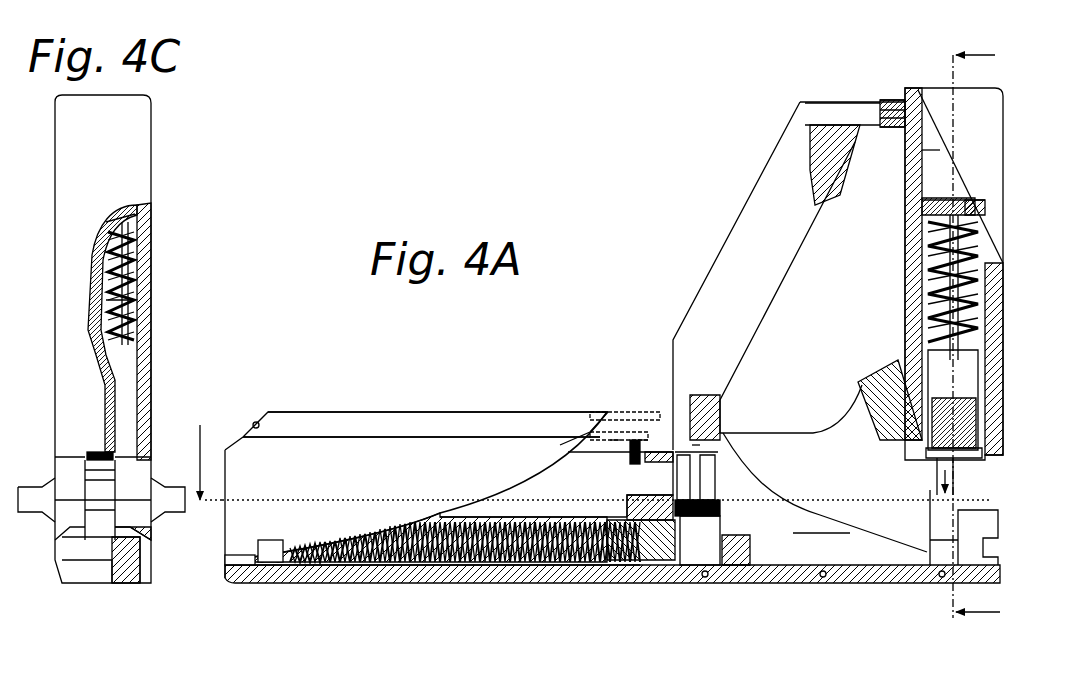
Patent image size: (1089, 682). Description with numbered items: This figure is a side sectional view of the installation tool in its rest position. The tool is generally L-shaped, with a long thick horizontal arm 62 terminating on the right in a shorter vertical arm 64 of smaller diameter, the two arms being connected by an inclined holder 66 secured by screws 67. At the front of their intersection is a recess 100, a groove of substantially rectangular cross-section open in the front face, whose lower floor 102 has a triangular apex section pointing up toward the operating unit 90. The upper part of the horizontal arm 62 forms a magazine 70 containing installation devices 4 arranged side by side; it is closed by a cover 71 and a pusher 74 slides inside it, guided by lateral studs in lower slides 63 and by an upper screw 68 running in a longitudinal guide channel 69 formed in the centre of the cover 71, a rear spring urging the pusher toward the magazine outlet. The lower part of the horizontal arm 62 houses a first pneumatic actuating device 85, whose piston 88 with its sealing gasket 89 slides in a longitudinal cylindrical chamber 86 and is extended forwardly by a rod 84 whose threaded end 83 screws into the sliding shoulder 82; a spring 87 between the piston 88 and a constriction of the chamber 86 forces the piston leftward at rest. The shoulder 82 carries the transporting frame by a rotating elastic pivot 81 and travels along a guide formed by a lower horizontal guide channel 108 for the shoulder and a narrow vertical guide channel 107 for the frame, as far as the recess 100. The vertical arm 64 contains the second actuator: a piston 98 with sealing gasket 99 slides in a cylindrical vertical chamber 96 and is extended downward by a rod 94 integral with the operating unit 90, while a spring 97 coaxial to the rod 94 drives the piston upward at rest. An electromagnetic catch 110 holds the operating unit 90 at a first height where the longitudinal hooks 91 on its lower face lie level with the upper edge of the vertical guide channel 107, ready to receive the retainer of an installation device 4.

The installation device 4 is at (730, 483).
The horizontal arm 62 is at (494, 598).
The lower slides 63 is at (513, 512).
The vertical arm 64 is at (1022, 274).
The inclined holder 66 is at (775, 207).
The screws 67 is at (692, 445).
The upper screw 68 is at (643, 440).
The longitudinal guide channel 69 is at (615, 440).
The magazine 70 is at (545, 490).
The cover 71 is at (465, 432).
The pusher 74 is at (626, 582).
The rotating elastic pivot 81 is at (713, 532).
The sliding shoulder 82 is at (733, 522).
The threaded end 83 is at (683, 562).
The rod 84 is at (407, 565).
The first pneumatic actuating device 85 is at (424, 578).
The cylindrical chamber 86 is at (252, 563).
The spring 87 is at (350, 572).
The piston 88 is at (258, 572).
The sealing gasket 89 is at (270, 572).
The operating unit 90 is at (978, 418).
The longitudinal hooks 91 is at (978, 458).
The rod 94 is at (970, 366).
The cylindrical vertical chamber 96 is at (950, 172).
The spring 97 is at (982, 292).
The piston 98 is at (972, 208).
The sealing gasket 99 is at (937, 205).
The recess 100 is at (975, 482).
The lower floor 102 is at (975, 521).
The vertical guide channel 107 is at (814, 533).
The lower horizontal guide channel 108 is at (878, 548).
The electromagnetic catch 110 is at (866, 395).